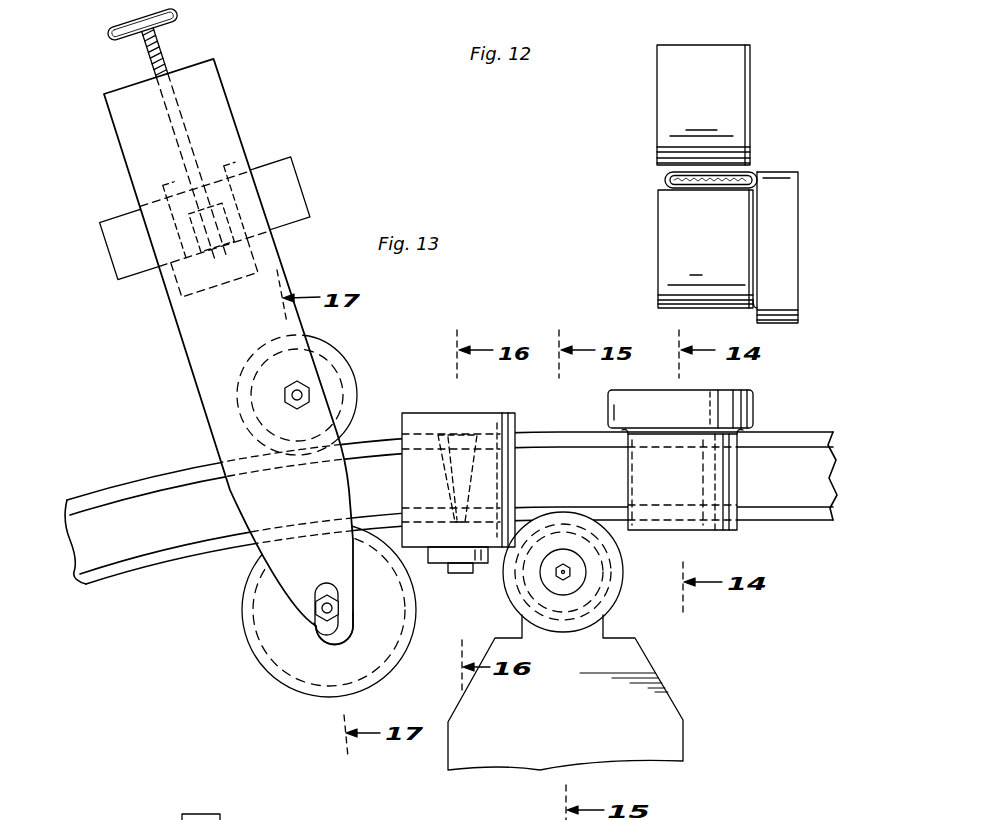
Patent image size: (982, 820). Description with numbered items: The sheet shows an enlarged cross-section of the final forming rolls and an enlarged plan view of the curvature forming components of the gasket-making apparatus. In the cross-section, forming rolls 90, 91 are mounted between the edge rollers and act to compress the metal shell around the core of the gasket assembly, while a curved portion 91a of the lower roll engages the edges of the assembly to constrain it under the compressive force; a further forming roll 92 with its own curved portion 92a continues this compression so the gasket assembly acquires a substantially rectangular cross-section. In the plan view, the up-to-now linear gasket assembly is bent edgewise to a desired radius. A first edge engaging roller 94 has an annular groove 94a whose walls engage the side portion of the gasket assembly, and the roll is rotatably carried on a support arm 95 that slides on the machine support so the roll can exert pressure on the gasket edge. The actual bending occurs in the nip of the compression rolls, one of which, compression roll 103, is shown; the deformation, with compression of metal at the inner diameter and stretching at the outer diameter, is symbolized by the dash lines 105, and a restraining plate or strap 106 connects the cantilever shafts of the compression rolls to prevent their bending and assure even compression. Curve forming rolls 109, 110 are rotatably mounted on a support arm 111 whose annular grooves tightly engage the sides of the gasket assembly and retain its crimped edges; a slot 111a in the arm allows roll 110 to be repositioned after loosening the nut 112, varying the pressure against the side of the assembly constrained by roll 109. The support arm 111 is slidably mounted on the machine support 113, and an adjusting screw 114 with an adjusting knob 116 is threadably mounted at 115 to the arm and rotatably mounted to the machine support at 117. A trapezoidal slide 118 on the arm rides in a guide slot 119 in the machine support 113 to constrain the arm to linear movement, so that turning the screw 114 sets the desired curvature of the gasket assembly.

In FIG. 12, the forming roll 90 is at (736, 93).
In FIG. 12, the forming roll 91 is at (783, 244).
In FIG. 12, the curved portion 91a is at (757, 190).
In FIG. 13, the forming roll 92 is at (755, 403).
In FIG. 13, the curved portion 92a is at (172, 818).
In FIG. 13, the edge engaging roller 94 is at (623, 574).
In FIG. 13, the annular groove 94a is at (608, 553).
In FIG. 13, the support arm 95 is at (660, 722).
In FIG. 13, the compression roll 103 is at (417, 418).
In FIG. 13, the dash lines 105 is at (486, 465).
In FIG. 13, the restraining plate or strap 106 is at (440, 565).
In FIG. 13, the curve forming roll 109 is at (342, 352).
In FIG. 13, the curve forming roll 110 is at (270, 675).
In FIG. 13, the support arm 111 is at (192, 328).
In FIG. 13, the slot 111a is at (330, 636).
In FIG. 13, the nut 112 is at (316, 610).
In FIG. 13, the machine support 113 is at (272, 184).
In FIG. 13, the adjusting screw 114 is at (168, 62).
In FIG. 13, the threaded mounting 115 is at (178, 115).
In FIG. 13, the adjusting knob 116 is at (110, 40).
In FIG. 13, the rotatable mounting 117 is at (290, 214).
In FIG. 13, the slide 118 is at (265, 162).
In FIG. 13, the guide slot 119 is at (145, 208).